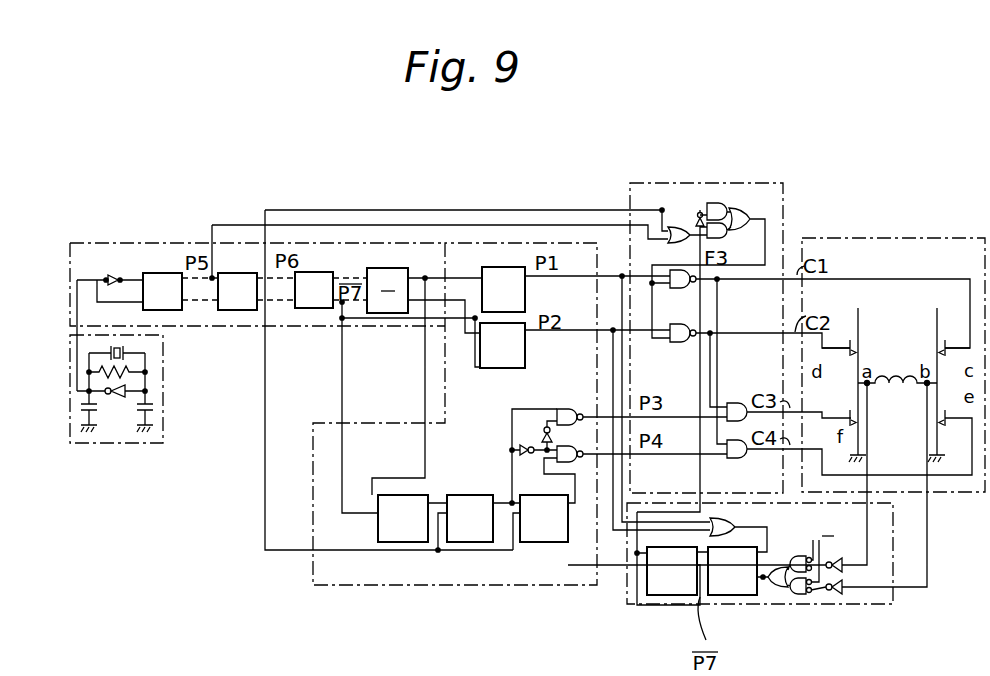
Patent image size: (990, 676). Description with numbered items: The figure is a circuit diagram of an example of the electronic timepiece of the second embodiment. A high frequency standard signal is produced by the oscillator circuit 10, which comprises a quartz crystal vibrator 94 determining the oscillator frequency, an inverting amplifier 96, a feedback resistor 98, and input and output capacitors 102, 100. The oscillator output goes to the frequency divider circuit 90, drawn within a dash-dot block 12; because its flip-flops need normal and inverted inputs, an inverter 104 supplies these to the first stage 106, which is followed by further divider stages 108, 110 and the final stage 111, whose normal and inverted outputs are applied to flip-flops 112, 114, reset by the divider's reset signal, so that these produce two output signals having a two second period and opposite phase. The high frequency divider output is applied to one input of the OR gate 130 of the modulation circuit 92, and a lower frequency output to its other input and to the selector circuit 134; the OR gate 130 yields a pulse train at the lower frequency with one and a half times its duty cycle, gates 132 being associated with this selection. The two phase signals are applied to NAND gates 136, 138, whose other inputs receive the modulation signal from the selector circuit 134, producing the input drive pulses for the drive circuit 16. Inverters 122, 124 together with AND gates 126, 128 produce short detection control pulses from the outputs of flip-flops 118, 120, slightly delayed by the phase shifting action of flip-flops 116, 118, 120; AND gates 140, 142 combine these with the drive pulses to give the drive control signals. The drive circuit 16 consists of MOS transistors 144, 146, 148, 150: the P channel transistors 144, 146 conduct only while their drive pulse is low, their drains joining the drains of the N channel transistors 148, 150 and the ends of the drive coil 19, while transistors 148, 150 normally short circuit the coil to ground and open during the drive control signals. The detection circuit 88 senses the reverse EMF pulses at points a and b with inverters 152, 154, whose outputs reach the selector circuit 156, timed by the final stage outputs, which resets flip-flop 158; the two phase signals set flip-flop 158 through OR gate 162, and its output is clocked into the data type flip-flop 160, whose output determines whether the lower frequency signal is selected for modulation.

The oscillator circuit 10 is at (131, 444).
The frequency divider circuit 12 is at (226, 328).
The drive circuit 16 is at (895, 238).
The drive coil 19 is at (907, 383).
The detection circuit 88 is at (800, 605).
The frequency divider circuit 90 is at (506, 588).
The modulation circuit 92 is at (645, 183).
The quartz crystal vibrator 94 is at (124, 348).
The inverting amplifier 96 is at (120, 400).
The feedback resistor 98 is at (130, 370).
The output capacitor 100 is at (80, 407).
The input capacitor 102 is at (152, 411).
The inverter 104 is at (115, 270).
The first stage 106 is at (165, 273).
The frequency divider stage 108 is at (237, 273).
The frequency divider stage 110 is at (314, 272).
The final stage 111 is at (385, 268).
The flip-flop 112 is at (500, 267).
The flip-flop 114 is at (527, 350).
The flip-flop 116 is at (402, 543).
The flip-flop 118 is at (466, 543).
The flip-flop 120 is at (539, 543).
The inverter 122 is at (516, 458).
The inverter 124 is at (540, 439).
The AND gate 126 is at (562, 409).
The AND gate 128 is at (571, 463).
The OR gate 130 is at (668, 231).
The AND gates 132 is at (698, 212).
The selector circuit 134 is at (740, 210).
The NAND gate 136 is at (680, 289).
The NAND gate 138 is at (680, 343).
The AND gate 140 is at (740, 403).
The AND gate 142 is at (738, 459).
The P channel MOS transistor 144 is at (935, 346).
The P channel MOS transistor 146 is at (862, 346).
The N channel MOS transistor 148 is at (940, 426).
The N channel MOS transistor 150 is at (858, 418).
The inverter 152 is at (845, 558).
The inverter 154 is at (840, 597).
The selector circuit 156 is at (773, 590).
The flip-flop 158 is at (727, 597).
The data type flip-flop 160 is at (672, 597).
The OR gate 162 is at (759, 531).